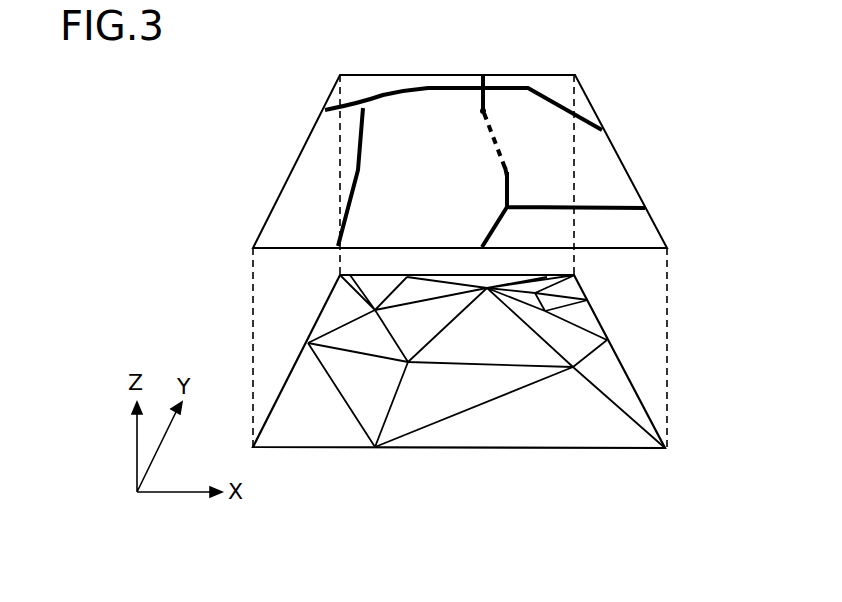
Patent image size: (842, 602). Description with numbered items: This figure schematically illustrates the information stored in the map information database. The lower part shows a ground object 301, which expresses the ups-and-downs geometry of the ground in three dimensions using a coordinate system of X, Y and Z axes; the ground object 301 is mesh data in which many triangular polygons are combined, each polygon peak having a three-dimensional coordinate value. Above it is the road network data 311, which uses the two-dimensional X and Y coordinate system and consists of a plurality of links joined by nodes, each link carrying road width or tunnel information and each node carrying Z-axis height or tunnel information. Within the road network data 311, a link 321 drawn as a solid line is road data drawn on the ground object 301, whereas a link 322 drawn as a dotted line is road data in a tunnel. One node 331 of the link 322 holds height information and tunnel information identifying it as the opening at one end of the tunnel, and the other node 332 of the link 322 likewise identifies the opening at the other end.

The ground object 301 is at (638, 390).
The road network data 311 is at (593, 106).
The link 321 is at (505, 186).
The link 322 is at (496, 146).
The node 331 is at (507, 170).
The node 332 is at (481, 108).